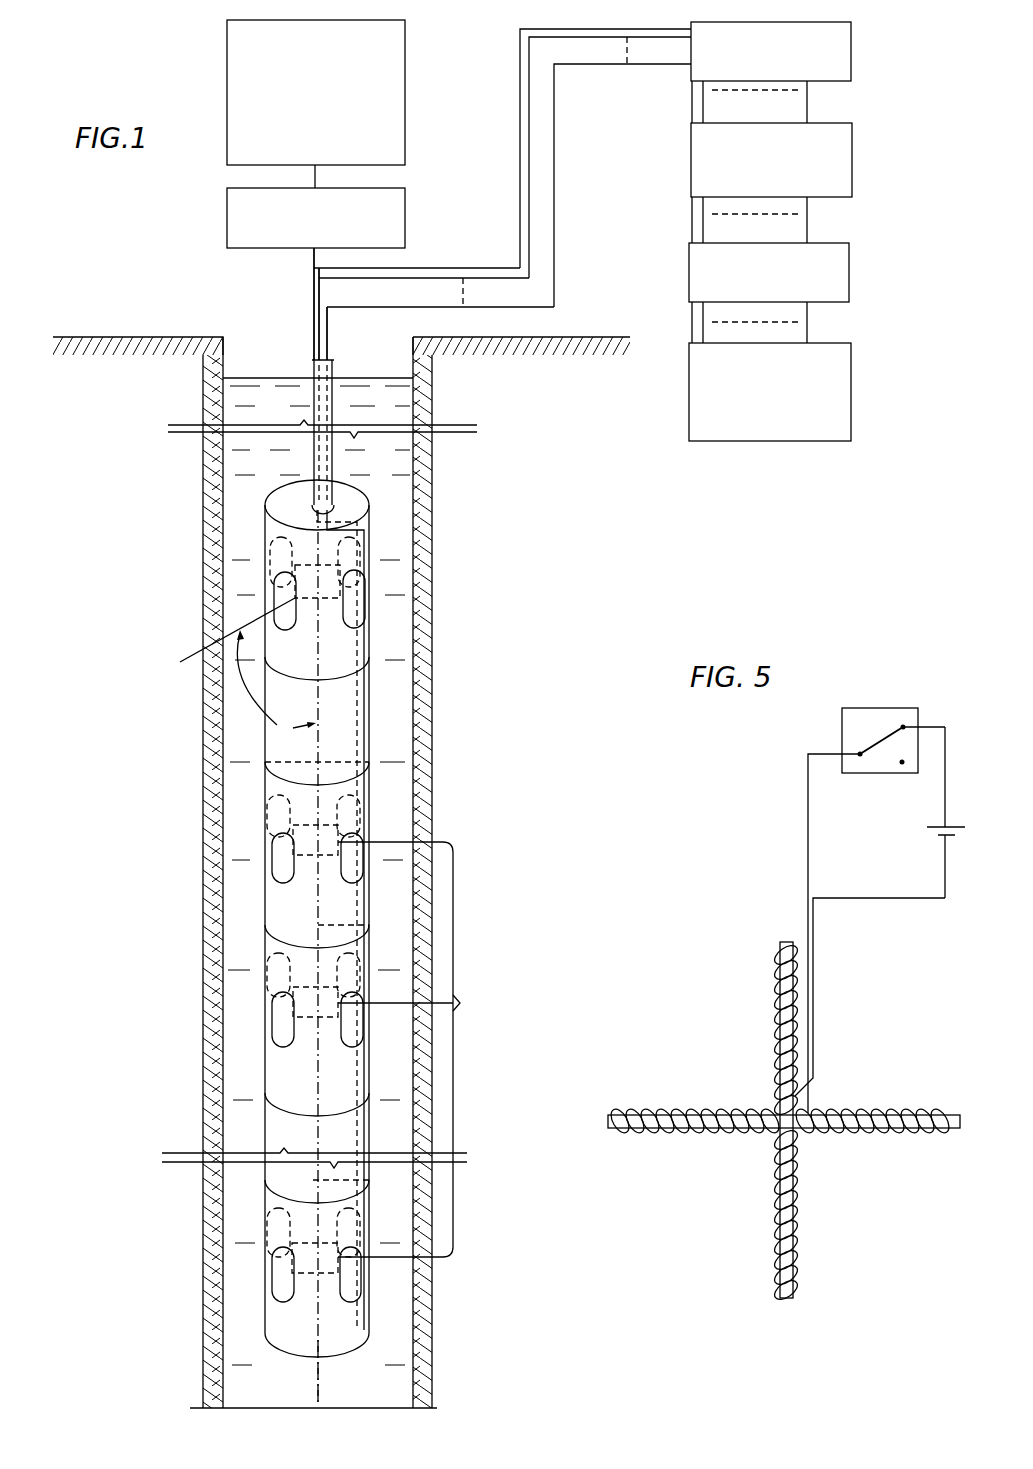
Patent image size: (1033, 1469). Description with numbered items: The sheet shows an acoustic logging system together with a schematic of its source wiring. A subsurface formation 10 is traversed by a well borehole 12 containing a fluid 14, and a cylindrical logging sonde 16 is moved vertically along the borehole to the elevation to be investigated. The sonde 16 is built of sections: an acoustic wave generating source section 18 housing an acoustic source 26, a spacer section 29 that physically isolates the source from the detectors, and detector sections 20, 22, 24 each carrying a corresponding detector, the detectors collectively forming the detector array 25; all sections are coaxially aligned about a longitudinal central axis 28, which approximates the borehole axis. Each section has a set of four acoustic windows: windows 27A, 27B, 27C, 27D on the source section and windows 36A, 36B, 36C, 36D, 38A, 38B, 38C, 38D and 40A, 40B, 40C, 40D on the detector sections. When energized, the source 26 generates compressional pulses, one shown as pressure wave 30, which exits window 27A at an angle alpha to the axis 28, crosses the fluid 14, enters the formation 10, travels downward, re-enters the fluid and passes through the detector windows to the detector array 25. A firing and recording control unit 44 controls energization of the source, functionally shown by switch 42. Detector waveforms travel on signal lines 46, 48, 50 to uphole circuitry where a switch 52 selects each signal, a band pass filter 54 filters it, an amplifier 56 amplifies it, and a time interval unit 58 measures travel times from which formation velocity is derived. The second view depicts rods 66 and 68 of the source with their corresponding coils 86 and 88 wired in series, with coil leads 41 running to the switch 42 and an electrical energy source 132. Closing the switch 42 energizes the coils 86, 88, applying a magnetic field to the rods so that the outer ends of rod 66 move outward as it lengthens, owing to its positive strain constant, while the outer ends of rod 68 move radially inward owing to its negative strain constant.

In FIG. 1, the subsurface formation 10 is at (478, 484).
In FIG. 1, the well borehole 12 is at (258, 328).
In FIG. 1, the fluid 14 is at (400, 400).
In FIG. 1, the logging sonde 16 is at (249, 747).
In FIG. 1, the acoustic wave generating source section 18 is at (252, 530).
In FIG. 1, the detector section 20 is at (256, 842).
In FIG. 1, the detector section 22 is at (253, 978).
In FIG. 1, the detector section 24 is at (254, 1212).
In FIG. 1, the detector array 25 is at (474, 1049).
In FIG. 1, the acoustic source 26 is at (332, 600).
In FIG. 1, the acoustic window 27A is at (295, 622).
In FIG. 1, the acoustic window 27B is at (352, 628).
In FIG. 1, the acoustic window 27C is at (352, 557).
In FIG. 1, the acoustic window 27D is at (273, 551).
In FIG. 1, the longitudinal central axis 28 is at (318, 1380).
In FIG. 1, the spacer section 29 is at (370, 729).
In FIG. 1, the pressure wave 30 is at (180, 662).
In FIG. 1, the acoustic window 36A is at (282, 870).
In FIG. 1, the acoustic window 36B is at (342, 872).
In FIG. 1, the acoustic window 36C is at (355, 812).
In FIG. 1, the acoustic window 36D is at (275, 808).
In FIG. 1, the acoustic window 38A is at (280, 1030).
In FIG. 1, the acoustic window 38B is at (345, 1040).
In FIG. 1, the acoustic window 38C is at (350, 972).
In FIG. 1, the acoustic window 38D is at (275, 990).
In FIG. 1, the acoustic window 40A is at (275, 1282).
In FIG. 1, the acoustic window 40B is at (360, 1285).
In FIG. 1, the acoustic window 40C is at (355, 1222).
In FIG. 1, the acoustic window 40D is at (270, 1236).
In FIG. 5, the coil leads 41 is at (808, 778).
In FIG. 1, the switch 42 is at (225, 222).
In FIG. 5, the switch 42 is at (866, 708).
In FIG. 1, the firing and recording control unit 44 is at (225, 87).
In FIG. 1, the signal line 46 is at (520, 106).
In FIG. 1, the signal line 48 is at (529, 150).
In FIG. 1, the signal line 50 is at (554, 177).
In FIG. 1, the switch 52 is at (852, 50).
In FIG. 1, the band pass filter 54 is at (852, 155).
In FIG. 1, the amplifier 56 is at (850, 272).
In FIG. 1, the time interval unit 58 is at (851, 393).
In FIG. 5, the rod 66 is at (610, 1118).
In FIG. 5, the rod 68 is at (783, 1300).
In FIG. 5, the first coil 86 is at (672, 1130).
In FIG. 5, the second coil 88 is at (780, 1007).
In FIG. 5, the electrical energy source 132 is at (928, 830).